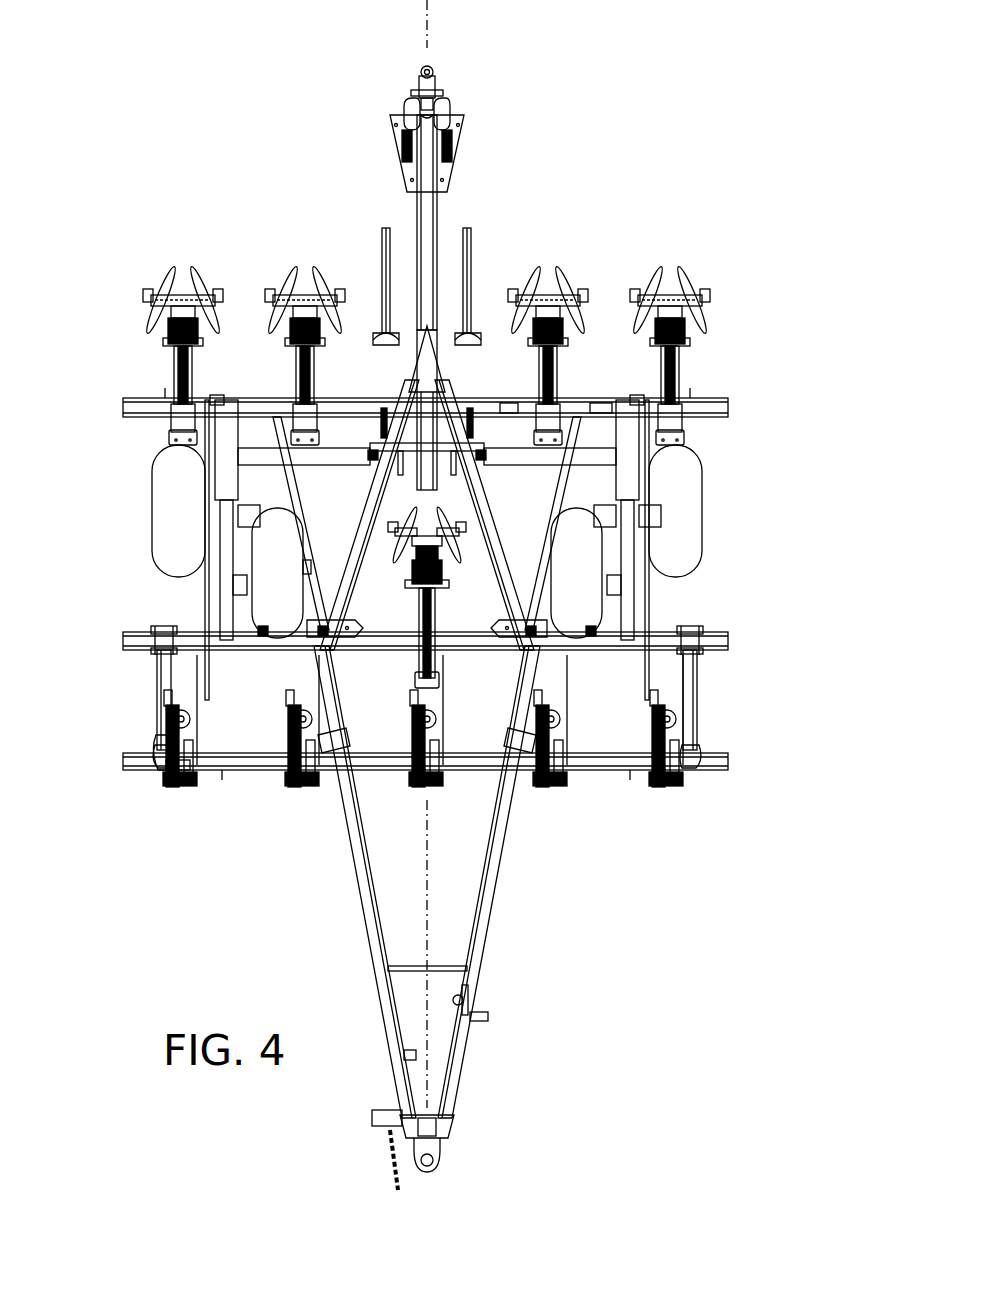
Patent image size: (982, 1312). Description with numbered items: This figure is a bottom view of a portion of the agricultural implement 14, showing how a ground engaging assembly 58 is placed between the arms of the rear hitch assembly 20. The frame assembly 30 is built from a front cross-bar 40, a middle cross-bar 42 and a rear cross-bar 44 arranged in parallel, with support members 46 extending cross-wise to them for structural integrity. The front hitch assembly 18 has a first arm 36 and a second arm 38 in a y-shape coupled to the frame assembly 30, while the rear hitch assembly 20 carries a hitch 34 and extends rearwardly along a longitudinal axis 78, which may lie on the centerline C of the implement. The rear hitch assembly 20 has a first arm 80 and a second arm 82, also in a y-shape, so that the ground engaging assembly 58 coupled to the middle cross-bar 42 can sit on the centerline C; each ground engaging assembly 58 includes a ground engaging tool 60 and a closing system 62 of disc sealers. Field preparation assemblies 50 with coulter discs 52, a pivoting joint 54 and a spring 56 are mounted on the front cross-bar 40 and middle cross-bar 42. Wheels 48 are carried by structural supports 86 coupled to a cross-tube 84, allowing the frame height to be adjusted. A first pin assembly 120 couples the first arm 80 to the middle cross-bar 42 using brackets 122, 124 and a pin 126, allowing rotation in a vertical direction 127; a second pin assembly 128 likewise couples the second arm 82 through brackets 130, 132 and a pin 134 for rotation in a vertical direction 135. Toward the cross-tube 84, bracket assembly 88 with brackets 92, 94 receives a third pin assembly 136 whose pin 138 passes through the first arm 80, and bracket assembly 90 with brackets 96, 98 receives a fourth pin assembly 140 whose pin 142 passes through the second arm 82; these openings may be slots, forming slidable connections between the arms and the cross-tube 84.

The agricultural implement 14 is at (798, 932).
The front hitch assembly 18 is at (595, 988).
The rear hitch assembly 20 is at (455, 210).
The frame assembly 30 is at (95, 740).
The hitch 34 is at (445, 116).
The first arm 36 is at (493, 895).
The second arm 38 is at (345, 895).
The front cross-bar 40 is at (715, 768).
The middle cross-bar 42 is at (722, 650).
The rear cross-bar 44 is at (722, 400).
The support members 46 is at (700, 705).
The wheels 48 is at (720, 522).
The field preparation assemblies 50 is at (175, 815).
The coulter disc 52 is at (185, 690).
The pivoting joint 54 is at (170, 776).
The spring 56 is at (160, 742).
The ground engaging assembly 58 is at (622, 580).
The ground engaging tool 60 is at (396, 536).
The closing system 62 is at (462, 536).
The longitudinal axis 78 is at (429, 22).
The first arm 80 is at (530, 588).
The second arm 82 is at (322, 580).
The cross-tube 84 is at (560, 442).
The structural supports 86 is at (192, 462).
The bracket assembly 88 is at (486, 480).
The bracket assembly 90 is at (372, 478).
The bracket 92 is at (540, 440).
The bracket 94 is at (470, 410).
The bracket 96 is at (384, 410).
The bracket 98 is at (312, 440).
The first pin assembly 120 is at (588, 642).
The bracket 122 is at (532, 645).
The bracket 124 is at (495, 680).
The pin 126 is at (462, 662).
The vertical direction 127 is at (450, 650).
The second pin assembly 128 is at (268, 642).
The bracket 130 is at (360, 680).
The bracket 132 is at (322, 645).
The pin 134 is at (392, 662).
The vertical direction 135 is at (405, 650).
The third pin assembly 136 is at (482, 455).
The pin 138 is at (488, 440).
The fourth pin assembly 140 is at (372, 455).
The pin 142 is at (372, 452).
The centerline C is at (430, 885).